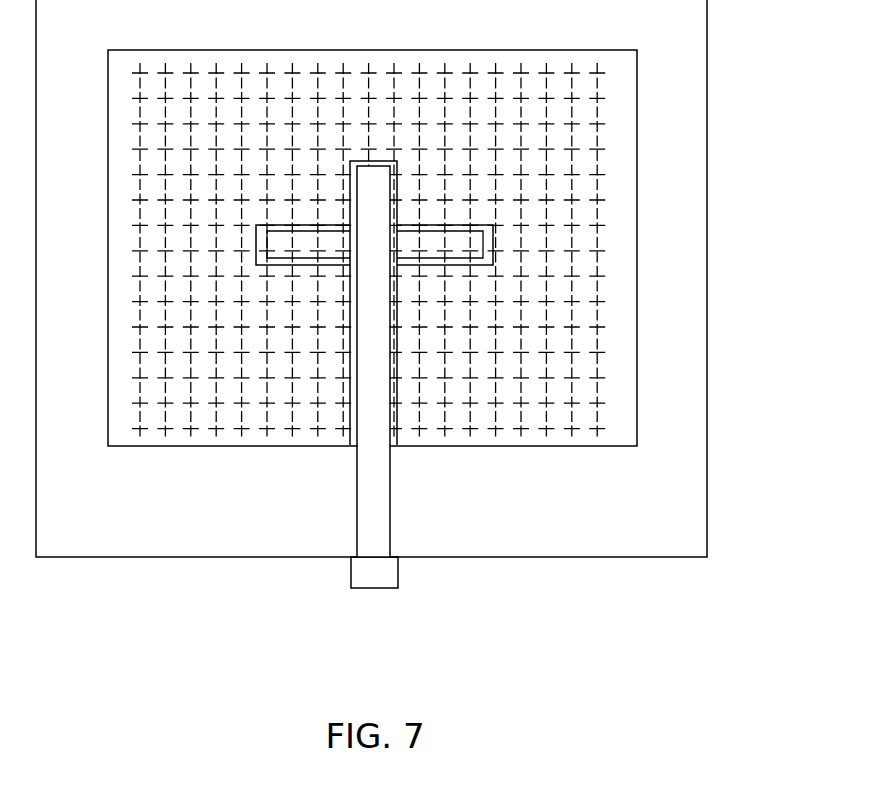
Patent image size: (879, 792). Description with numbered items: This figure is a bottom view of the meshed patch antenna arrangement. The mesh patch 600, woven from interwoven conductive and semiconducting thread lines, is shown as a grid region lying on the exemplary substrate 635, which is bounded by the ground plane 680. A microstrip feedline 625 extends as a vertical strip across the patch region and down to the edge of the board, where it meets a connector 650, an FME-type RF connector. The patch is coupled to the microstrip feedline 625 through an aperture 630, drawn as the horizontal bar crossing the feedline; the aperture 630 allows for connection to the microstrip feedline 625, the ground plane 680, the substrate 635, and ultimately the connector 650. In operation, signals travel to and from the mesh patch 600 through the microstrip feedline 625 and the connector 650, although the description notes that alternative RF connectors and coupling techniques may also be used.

The mesh patch 600 is at (533, 74).
The ground plane 680 is at (626, 113).
The substrate 635 is at (182, 527).
The aperture 630 is at (450, 263).
The microstrip feedline 625 is at (391, 507).
The connector 650 is at (351, 575).